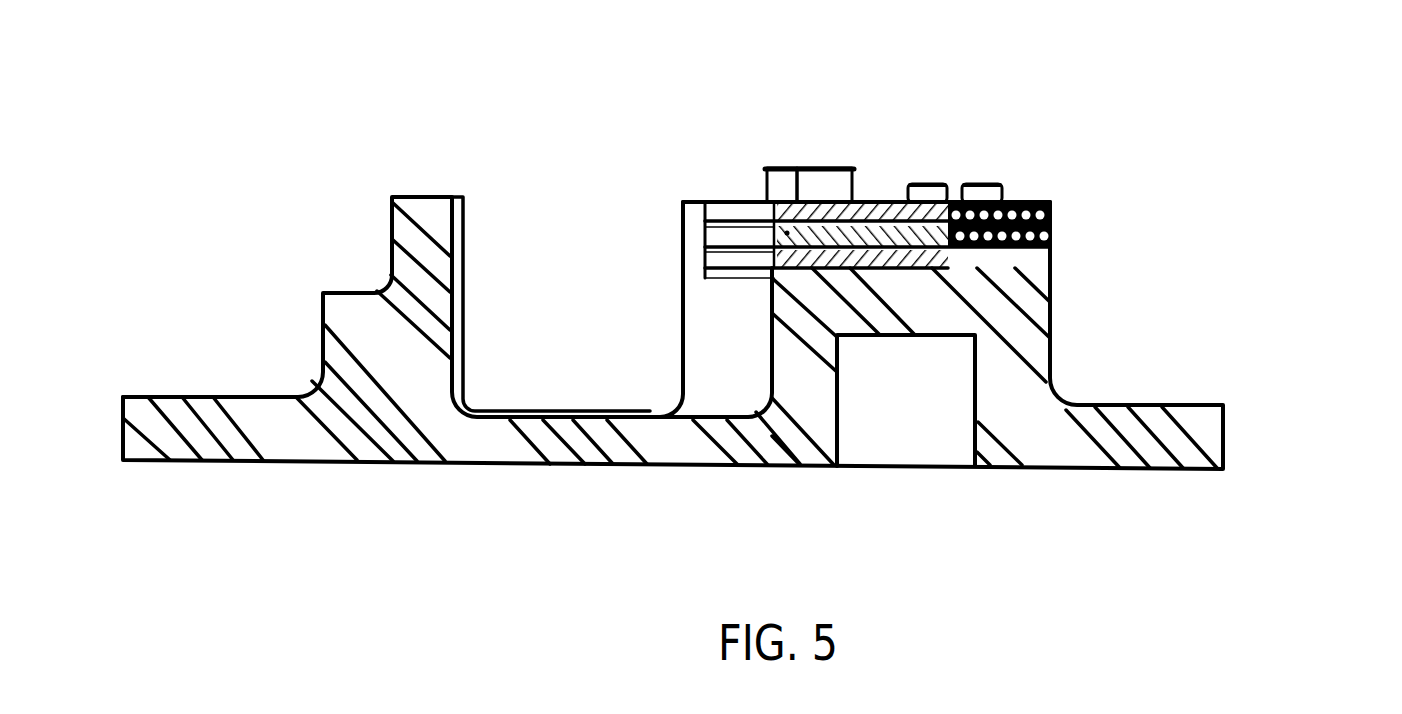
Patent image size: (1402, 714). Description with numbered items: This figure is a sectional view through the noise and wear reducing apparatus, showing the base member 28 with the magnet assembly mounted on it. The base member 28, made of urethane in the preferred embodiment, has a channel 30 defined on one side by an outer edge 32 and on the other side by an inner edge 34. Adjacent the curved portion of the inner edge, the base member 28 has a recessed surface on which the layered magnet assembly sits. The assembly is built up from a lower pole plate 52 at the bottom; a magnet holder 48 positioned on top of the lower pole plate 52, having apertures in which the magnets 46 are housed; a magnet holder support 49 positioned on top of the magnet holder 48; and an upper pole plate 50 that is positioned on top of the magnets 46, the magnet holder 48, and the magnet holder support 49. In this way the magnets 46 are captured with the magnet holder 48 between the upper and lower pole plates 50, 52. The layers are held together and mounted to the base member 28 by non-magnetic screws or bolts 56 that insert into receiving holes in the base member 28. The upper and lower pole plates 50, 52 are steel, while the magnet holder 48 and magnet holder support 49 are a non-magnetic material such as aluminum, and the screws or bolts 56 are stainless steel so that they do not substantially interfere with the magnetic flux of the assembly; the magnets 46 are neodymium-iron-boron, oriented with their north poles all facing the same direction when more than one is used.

The base member 28 is at (1190, 425).
The channel 30 is at (557, 358).
The outer edge 32 is at (465, 297).
The inner edge 34 is at (683, 297).
The magnets 46 is at (906, 252).
The magnet holder 48 is at (780, 232).
The magnet holder support 49 is at (1017, 202).
The upper pole plate 50 is at (868, 203).
The lower pole plate 52 is at (812, 258).
The non-magnetic screws or bolts 56 is at (828, 168).